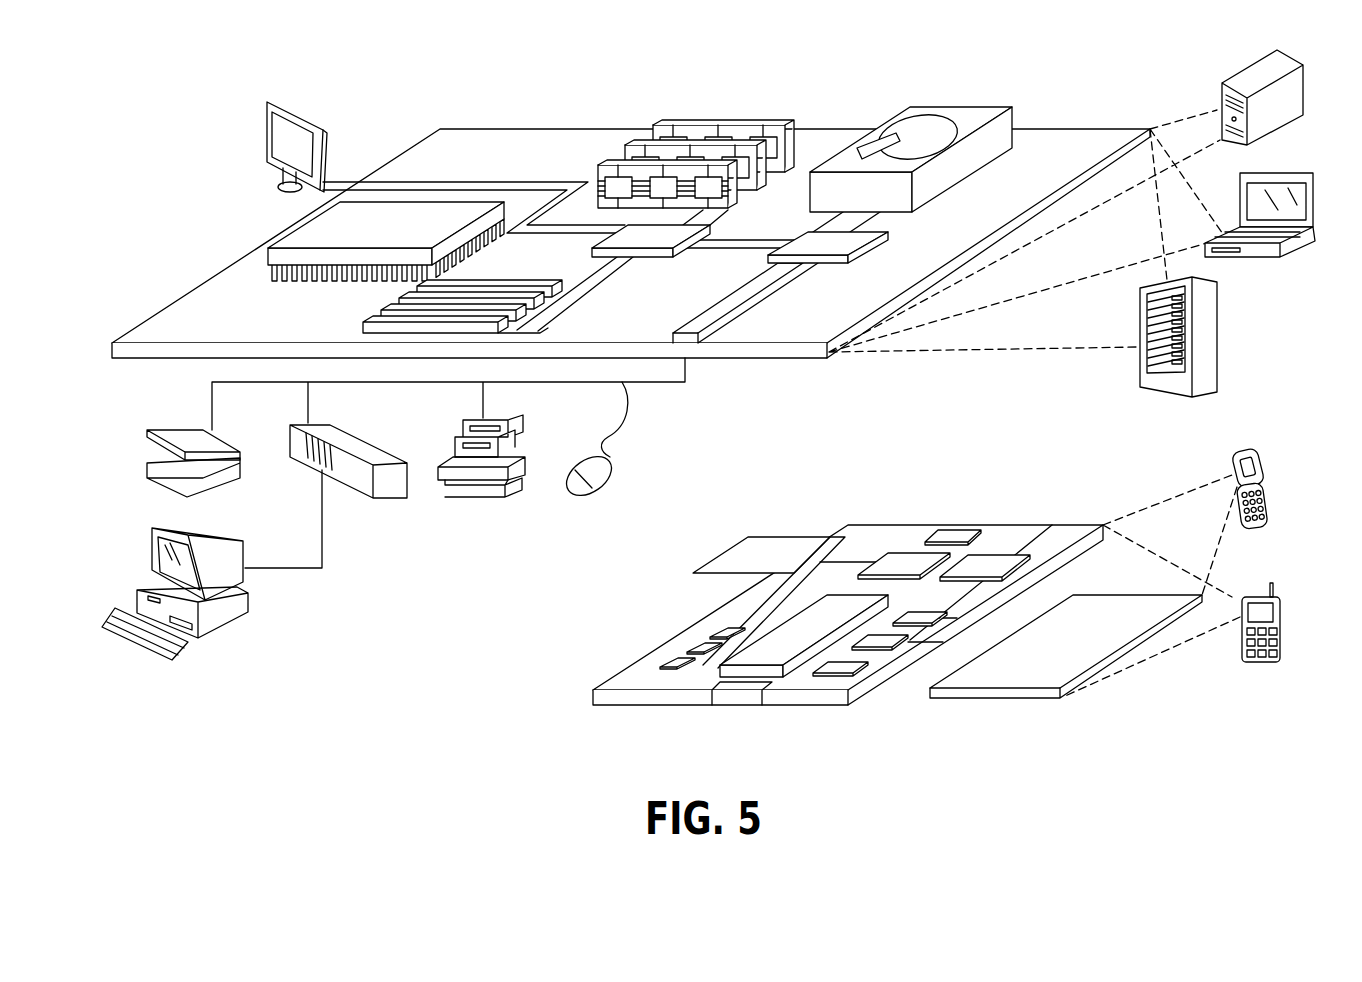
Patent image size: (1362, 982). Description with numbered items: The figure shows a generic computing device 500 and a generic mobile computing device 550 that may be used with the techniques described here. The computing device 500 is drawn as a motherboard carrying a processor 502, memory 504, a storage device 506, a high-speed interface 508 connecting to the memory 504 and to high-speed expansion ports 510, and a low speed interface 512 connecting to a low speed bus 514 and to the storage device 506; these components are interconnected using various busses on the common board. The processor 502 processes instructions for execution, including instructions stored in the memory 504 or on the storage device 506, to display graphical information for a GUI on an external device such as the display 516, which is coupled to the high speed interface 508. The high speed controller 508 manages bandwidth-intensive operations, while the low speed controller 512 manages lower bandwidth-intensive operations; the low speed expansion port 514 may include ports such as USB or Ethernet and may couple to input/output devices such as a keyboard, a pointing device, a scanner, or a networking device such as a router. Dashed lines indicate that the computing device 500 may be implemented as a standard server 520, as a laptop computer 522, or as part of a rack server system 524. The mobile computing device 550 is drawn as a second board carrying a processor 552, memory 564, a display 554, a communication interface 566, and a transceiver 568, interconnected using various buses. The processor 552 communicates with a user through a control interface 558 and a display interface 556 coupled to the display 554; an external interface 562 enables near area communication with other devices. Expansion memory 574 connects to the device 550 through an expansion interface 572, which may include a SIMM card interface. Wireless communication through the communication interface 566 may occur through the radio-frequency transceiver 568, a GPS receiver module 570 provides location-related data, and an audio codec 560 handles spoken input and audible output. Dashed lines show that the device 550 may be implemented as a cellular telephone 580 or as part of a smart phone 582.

The computing device 500 is at (397, 83).
The processor 502 is at (294, 230).
The memory 504 is at (727, 128).
The storage device 506 is at (950, 108).
The high-speed interface 508 is at (662, 233).
The high-speed expansion ports 510 is at (390, 307).
The low speed interface 512 is at (803, 241).
The low speed bus 514 is at (690, 328).
The display 516 is at (268, 100).
The standard server 520 is at (1243, 80).
The laptop computer 522 is at (1292, 173).
The rack server system 524 is at (1218, 340).
The mobile computer device 550 is at (553, 708).
The processor 552 is at (773, 642).
The display 554 is at (1102, 610).
The display interface 556 is at (863, 667).
The control interface 558 is at (888, 640).
The audio codec 560 is at (927, 606).
The external interface 562 is at (737, 693).
The memory 564 is at (688, 645).
The communication interface 566 is at (903, 556).
The transceiver 568 is at (992, 558).
The GPS receiver module 570 is at (953, 533).
The expansion interface 572 is at (827, 535).
The expansion memory 574 is at (749, 537).
The cellular telephone 580 is at (1243, 452).
The smart phone 582 is at (1257, 596).